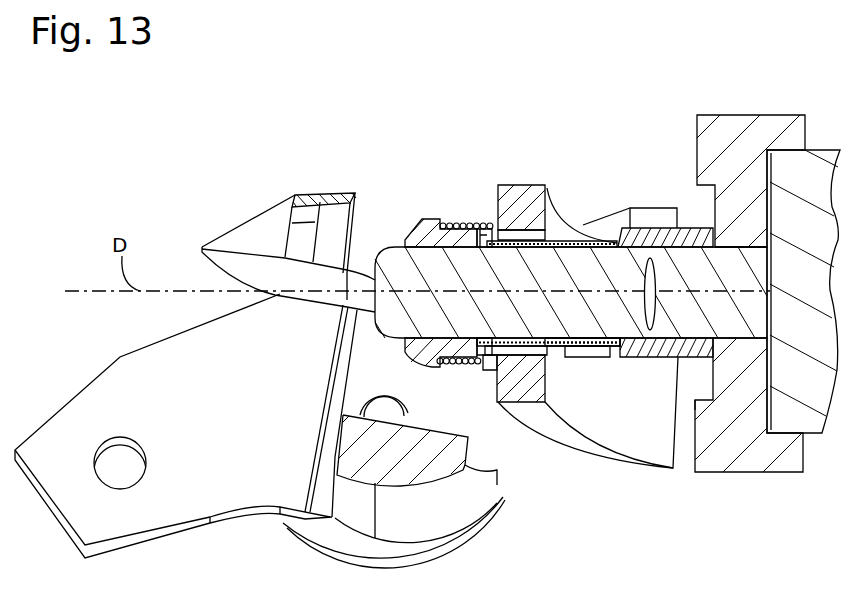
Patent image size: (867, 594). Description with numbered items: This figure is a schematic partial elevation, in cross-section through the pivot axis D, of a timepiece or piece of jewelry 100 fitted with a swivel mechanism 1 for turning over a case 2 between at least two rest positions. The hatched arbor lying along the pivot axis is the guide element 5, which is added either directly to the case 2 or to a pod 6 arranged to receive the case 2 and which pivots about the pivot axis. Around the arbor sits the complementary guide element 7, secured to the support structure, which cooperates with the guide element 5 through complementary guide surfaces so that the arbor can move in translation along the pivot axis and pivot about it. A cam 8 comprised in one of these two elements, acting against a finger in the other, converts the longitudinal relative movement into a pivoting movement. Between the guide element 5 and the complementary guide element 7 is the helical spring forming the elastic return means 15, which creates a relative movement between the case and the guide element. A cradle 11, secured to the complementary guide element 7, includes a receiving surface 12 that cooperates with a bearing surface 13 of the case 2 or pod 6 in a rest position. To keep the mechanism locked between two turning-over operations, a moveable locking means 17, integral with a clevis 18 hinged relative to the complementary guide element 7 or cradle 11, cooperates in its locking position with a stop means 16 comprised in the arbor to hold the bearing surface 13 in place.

The swivel mechanism 1 is at (434, 398).
The case 2 is at (797, 403).
The guide element 5 is at (688, 272).
The pod 6 is at (775, 140).
The complementary guide element 7 is at (497, 372).
The cam 8 is at (522, 245).
The cradle 11 is at (558, 431).
The receiving surface 12 is at (592, 403).
The bearing surface 13 is at (694, 408).
The elastic return means 15 is at (474, 226).
The stop means 16 is at (441, 215).
The moveable locking means 17 is at (291, 208).
The clevis 18 is at (157, 507).
The timepiece or piece of jewelry 100 is at (721, 98).